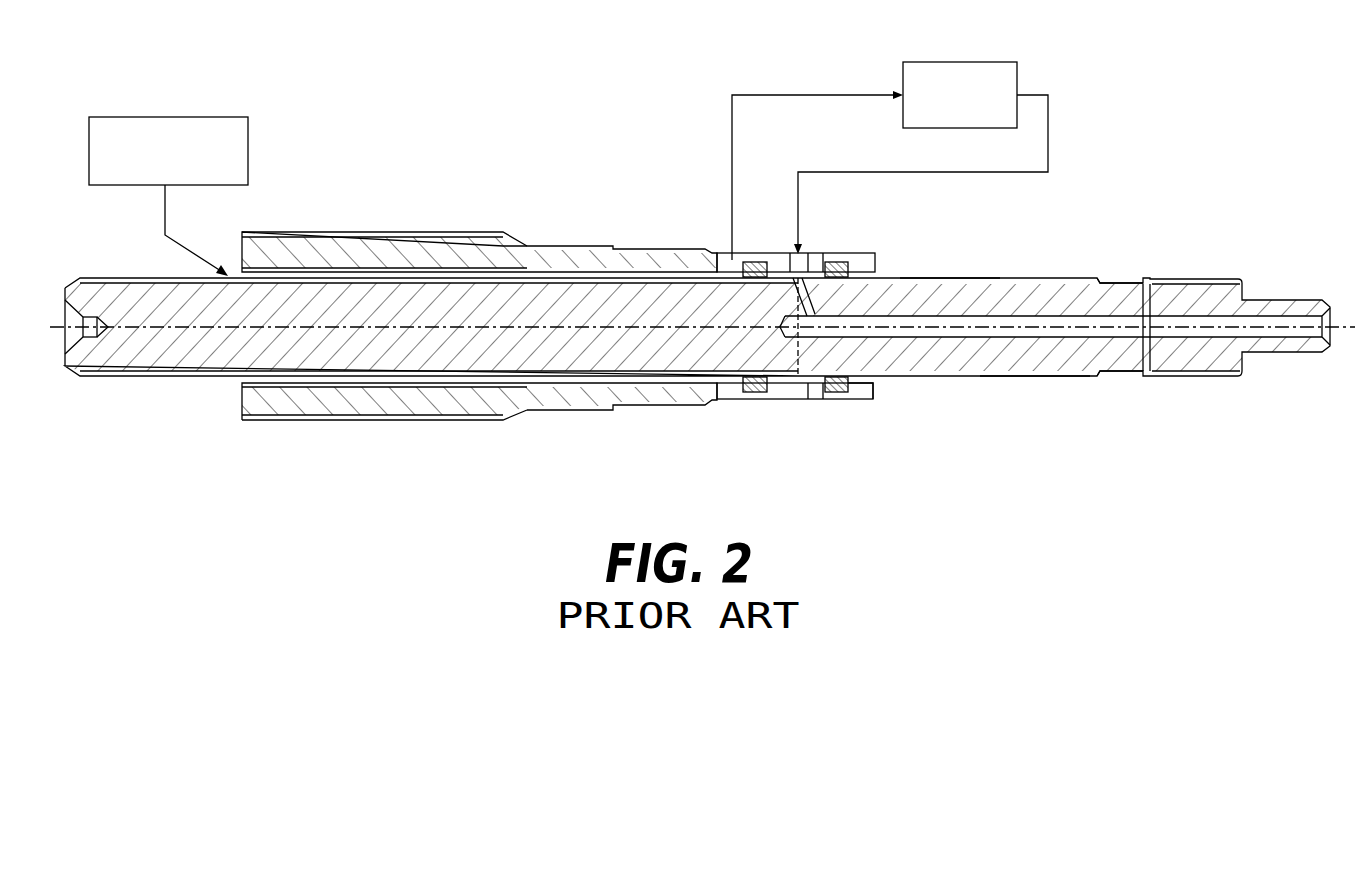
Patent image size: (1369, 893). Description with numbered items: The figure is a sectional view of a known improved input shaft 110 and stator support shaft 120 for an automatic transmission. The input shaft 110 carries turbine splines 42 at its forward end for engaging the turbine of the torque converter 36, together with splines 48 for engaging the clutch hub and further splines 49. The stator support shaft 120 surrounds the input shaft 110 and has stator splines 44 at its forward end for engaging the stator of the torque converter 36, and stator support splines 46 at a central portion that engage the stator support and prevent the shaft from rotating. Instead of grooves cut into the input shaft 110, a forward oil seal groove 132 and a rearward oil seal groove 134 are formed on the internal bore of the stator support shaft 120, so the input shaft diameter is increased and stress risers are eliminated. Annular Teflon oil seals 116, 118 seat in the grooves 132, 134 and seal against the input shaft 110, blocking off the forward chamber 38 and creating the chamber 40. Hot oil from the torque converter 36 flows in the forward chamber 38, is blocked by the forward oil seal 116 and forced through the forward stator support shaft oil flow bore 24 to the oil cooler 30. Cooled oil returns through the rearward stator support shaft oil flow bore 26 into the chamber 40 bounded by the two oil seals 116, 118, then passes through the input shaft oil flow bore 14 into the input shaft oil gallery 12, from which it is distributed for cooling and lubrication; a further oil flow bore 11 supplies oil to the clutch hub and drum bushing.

The oil flow bore 11 is at (865, 297).
The input shaft oil gallery 12 is at (1055, 322).
The input shaft oil flow bore 14 is at (812, 298).
The forward stator support shaft oil flow bore 24 is at (722, 255).
The rearward stator support shaft oil flow bore 26 is at (792, 258).
The oil cooler 30 is at (955, 62).
The torque converter 36 is at (170, 117).
The forward chamber 38 is at (456, 270).
The chamber 40 is at (822, 258).
The turbine splines 42 is at (163, 378).
The stator splines 44 is at (362, 400).
The stator support splines 46 is at (660, 410).
The splines 48 is at (955, 277).
The splines 49 is at (1125, 282).
The input shaft 110 is at (1028, 355).
The forward oil seal 116 is at (757, 258).
The rearward oil seal 118 is at (845, 258).
The stator support shaft 120 is at (560, 260).
The forward oil seal groove 132 is at (757, 392).
The rearward oil seal groove 134 is at (850, 388).